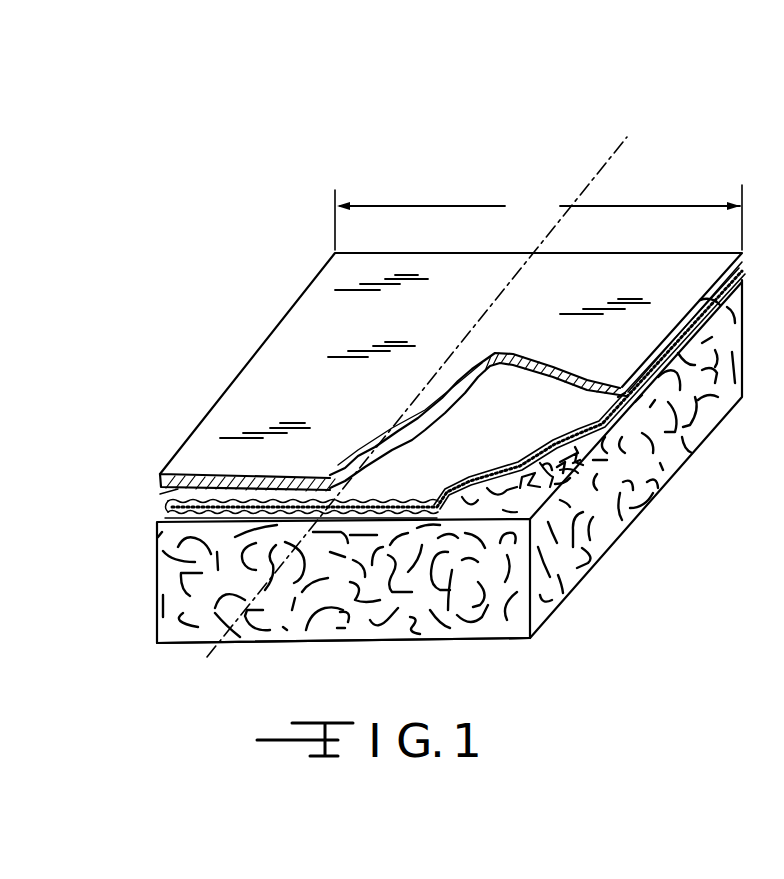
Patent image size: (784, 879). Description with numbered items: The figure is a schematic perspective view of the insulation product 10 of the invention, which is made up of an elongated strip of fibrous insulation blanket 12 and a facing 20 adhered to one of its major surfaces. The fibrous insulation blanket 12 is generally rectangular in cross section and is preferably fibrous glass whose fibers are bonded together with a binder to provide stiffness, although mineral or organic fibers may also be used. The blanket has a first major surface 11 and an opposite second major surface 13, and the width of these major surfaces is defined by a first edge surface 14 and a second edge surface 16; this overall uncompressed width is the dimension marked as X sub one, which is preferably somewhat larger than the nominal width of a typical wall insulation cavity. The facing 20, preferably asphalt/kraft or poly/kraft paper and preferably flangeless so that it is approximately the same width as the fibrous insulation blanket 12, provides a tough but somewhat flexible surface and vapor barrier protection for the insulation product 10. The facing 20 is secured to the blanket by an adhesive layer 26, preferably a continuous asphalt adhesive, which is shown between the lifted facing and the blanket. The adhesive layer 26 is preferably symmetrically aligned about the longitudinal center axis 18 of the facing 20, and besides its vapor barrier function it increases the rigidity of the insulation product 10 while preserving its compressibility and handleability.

The insulation product 10 is at (288, 205).
The first major surface 11 is at (540, 473).
The fibrous insulation blanket 12 is at (586, 584).
The second major surface 13 is at (483, 641).
The first edge surface 14 is at (157, 583).
The second edge surface 16 is at (592, 502).
The longitudinal center axis 18 is at (603, 167).
The facing 20 is at (295, 380).
The adhesive layer 26 is at (568, 411).